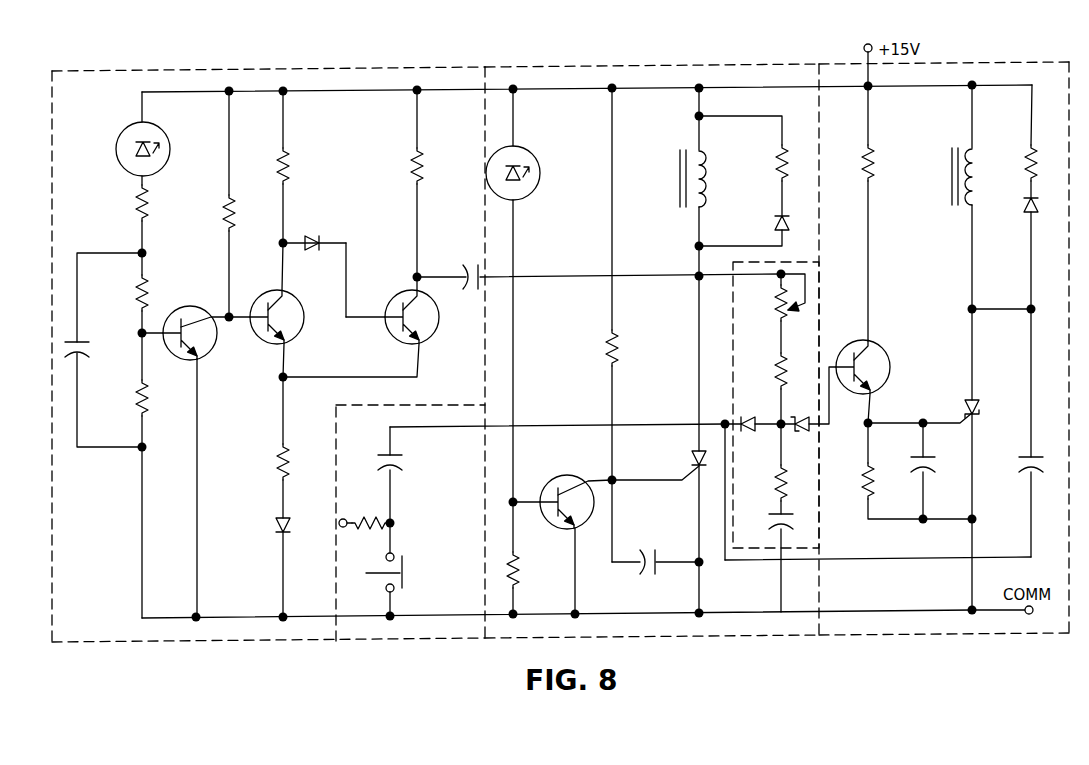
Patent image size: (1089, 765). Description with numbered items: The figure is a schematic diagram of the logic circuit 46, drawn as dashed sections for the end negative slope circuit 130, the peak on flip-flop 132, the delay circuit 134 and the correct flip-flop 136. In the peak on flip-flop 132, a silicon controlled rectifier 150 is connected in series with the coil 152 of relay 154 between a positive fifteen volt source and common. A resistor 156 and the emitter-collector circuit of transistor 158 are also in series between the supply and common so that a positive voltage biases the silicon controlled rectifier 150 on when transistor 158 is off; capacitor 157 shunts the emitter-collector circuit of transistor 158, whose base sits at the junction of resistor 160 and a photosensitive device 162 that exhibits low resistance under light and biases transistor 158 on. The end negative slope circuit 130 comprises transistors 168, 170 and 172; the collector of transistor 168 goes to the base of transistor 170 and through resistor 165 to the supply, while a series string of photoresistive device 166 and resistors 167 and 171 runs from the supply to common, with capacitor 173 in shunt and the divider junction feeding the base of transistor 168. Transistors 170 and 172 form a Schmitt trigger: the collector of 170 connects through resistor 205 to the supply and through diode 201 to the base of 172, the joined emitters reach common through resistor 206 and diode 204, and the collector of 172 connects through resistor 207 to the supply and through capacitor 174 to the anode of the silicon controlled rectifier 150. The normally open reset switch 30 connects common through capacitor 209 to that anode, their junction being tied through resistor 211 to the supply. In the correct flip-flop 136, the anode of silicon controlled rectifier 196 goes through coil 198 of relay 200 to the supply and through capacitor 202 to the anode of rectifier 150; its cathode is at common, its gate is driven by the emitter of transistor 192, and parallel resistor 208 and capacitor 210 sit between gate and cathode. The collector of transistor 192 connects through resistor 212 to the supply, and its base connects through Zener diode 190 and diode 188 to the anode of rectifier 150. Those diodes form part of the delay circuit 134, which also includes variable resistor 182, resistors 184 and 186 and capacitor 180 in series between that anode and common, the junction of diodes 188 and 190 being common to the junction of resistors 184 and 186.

The logic circuit 46 is at (52, 106).
The end negative slope circuit 130 is at (224, 70).
The peak on flip-flop 132 is at (604, 67).
The delay circuit 134 is at (821, 288).
The correct flip-flop 136 is at (964, 64).
The reset switch 30 is at (405, 570).
The silicon controlled rectifier 150 is at (698, 453).
The coil 152 is at (707, 176).
The relay 154 is at (678, 175).
The resistor 156 is at (619, 350).
The capacitor 157 is at (650, 576).
The transistor 158 is at (553, 483).
The resistor 160 is at (519, 566).
The photosensitive device 162 is at (541, 176).
The resistor 165 is at (226, 214).
The photoresistive device 166 is at (161, 171).
The resistor 167 is at (139, 214).
The transistor 168 is at (200, 362).
The transistor 170 is at (290, 340).
The resistor 171 is at (144, 404).
The transistor 172 is at (426, 340).
The capacitor 173 is at (89, 352).
The capacitor 174 is at (468, 262).
The capacitor 180 is at (772, 528).
The variable resistor 182 is at (777, 308).
The resistor 184 is at (777, 378).
The resistor 186 is at (777, 488).
The diode 188 is at (735, 422).
The Zener diode 190 is at (815, 432).
The transistor 192 is at (877, 343).
The silicon controlled rectifier 196 is at (976, 402).
The coil 198 is at (975, 152).
The relay 200 is at (946, 156).
The diode 201 is at (298, 240).
The capacitor 202 is at (1018, 476).
The diode 204 is at (290, 521).
The resistor 205 is at (289, 172).
The resistor 206 is at (281, 464).
The resistor 207 is at (421, 172).
The resistor 208 is at (866, 485).
The capacitor 209 is at (404, 464).
The capacitor 210 is at (943, 478).
The resistor 211 is at (378, 530).
The resistor 212 is at (875, 176).